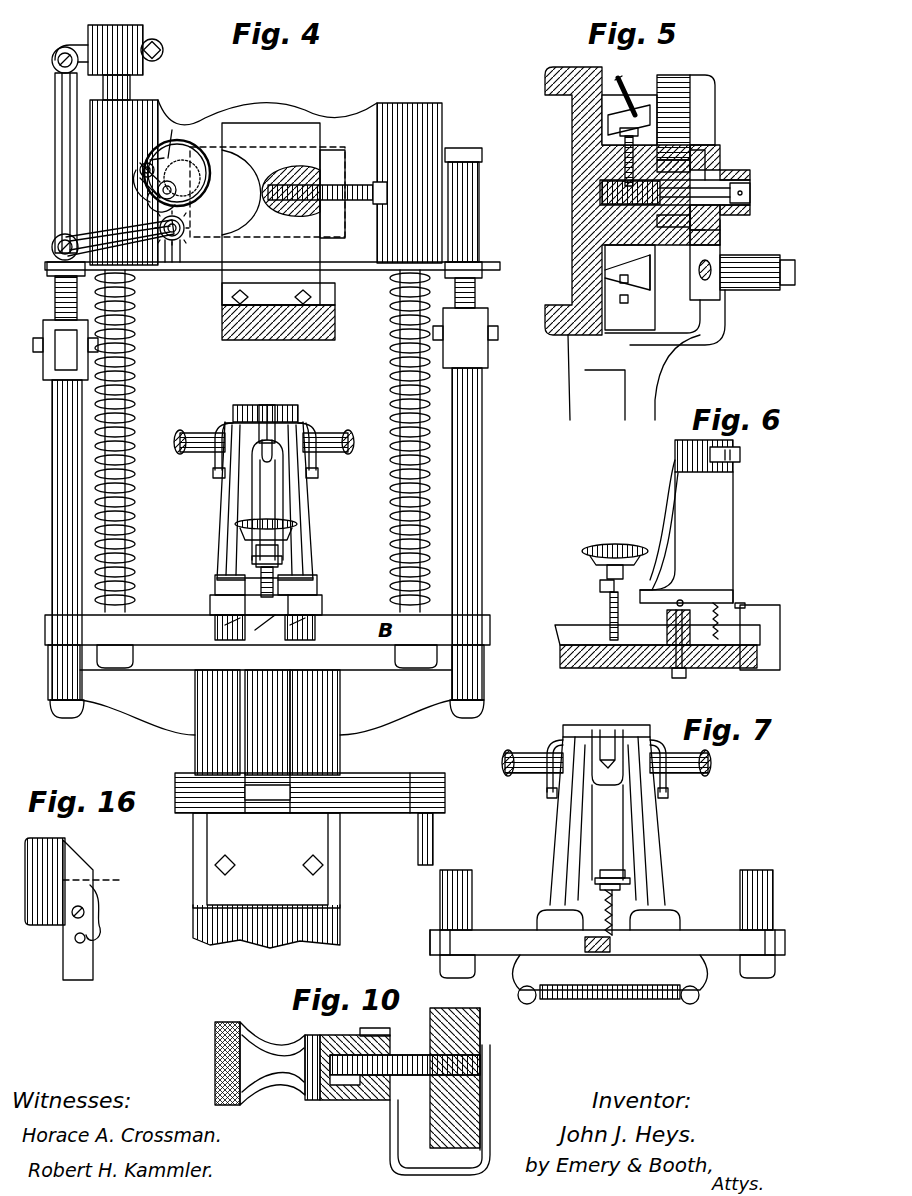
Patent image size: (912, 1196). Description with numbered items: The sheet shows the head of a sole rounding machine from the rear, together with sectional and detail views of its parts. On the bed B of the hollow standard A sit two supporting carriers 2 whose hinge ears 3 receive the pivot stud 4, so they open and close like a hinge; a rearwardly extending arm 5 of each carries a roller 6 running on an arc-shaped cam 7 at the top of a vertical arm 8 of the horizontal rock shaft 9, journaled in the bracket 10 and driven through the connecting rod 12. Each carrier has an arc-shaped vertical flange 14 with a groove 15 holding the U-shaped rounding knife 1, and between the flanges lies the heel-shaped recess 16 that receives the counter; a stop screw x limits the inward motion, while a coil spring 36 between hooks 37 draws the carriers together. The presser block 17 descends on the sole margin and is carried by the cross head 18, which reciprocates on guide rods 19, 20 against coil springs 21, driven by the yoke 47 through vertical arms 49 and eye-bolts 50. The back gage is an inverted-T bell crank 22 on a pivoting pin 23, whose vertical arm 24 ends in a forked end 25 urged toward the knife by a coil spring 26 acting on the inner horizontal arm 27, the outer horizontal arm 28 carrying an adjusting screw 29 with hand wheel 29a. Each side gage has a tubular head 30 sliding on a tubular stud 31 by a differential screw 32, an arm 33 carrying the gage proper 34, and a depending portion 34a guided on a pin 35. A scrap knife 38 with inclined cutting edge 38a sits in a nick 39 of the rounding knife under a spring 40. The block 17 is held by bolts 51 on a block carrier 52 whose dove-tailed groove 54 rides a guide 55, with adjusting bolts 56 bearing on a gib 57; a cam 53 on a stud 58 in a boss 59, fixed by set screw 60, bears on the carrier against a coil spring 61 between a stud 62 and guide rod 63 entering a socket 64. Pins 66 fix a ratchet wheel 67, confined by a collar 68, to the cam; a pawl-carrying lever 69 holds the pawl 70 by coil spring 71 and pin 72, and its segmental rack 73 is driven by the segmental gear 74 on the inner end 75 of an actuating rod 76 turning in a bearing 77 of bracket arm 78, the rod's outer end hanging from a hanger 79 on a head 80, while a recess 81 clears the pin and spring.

In FIG. 4, the rounding knife 1 is at (288, 412).
In FIG. 16, the rounding knife 1 is at (65, 842).
In FIG. 6, the rounding knife 1 is at (733, 445).
In FIG. 7, the rounding knife 1 is at (612, 728).
In FIG. 10, the rounding knife 1 is at (480, 1028).
In FIG. 4, the supporting carriers 2 is at (317, 585).
In FIG. 7, the supporting carriers 2 is at (680, 918).
In FIG. 6, the hinge ears 3 is at (667, 635).
In FIG. 7, the hinge ears 3 is at (612, 935).
In FIG. 6, the pivot stud 4 is at (670, 670).
In FIG. 7, the pivot stud 4 is at (625, 882).
In FIG. 4, the rearwardly extending arm 5 is at (160, 275).
In FIG. 6, the rearwardly extending arm 5 is at (570, 630).
In FIG. 4, the roller 6 is at (250, 398).
In FIG. 4, the arc-shaped cam 7 is at (315, 628).
In FIG. 4, the vertical arm 8 is at (308, 742).
In FIG. 4, the horizontal rock shaft 9 is at (270, 800).
In FIG. 4, the bracket 10 is at (266, 860).
In FIG. 4, the connecting rod 12 is at (418, 838).
In FIG. 4, the vertical flange 14 is at (310, 520).
In FIG. 16, the vertical flange 14 is at (93, 970).
In FIG. 6, the vertical flange 14 is at (722, 496).
In FIG. 7, the vertical flange 14 is at (655, 842).
In FIG. 10, the vertical flange 14 is at (435, 1010).
In FIG. 6, the groove or rabbet 15 is at (672, 463).
In FIG. 6, the heel-shaped recess 16 is at (682, 531).
In FIG. 4, the presser block 17 is at (335, 322).
In FIG. 4, the cross head 18 is at (305, 110).
In FIG. 5, the cross head 18 is at (572, 220).
In FIG. 4, the vertical guide rod 19 is at (395, 403).
In FIG. 7, the vertical guide rod 19 is at (765, 875).
In FIG. 4, the vertical guide rod 20 is at (137, 400).
In FIG. 7, the vertical guide rod 20 is at (472, 886).
In FIG. 4, the coil springs 21 is at (395, 365).
In FIG. 6, the bell crank 22 is at (686, 588).
In FIG. 6, the pivoting pin 23 is at (683, 600).
In FIG. 7, the pivoting pin 23 is at (600, 874).
In FIG. 4, the vertical arm 24 is at (268, 497).
In FIG. 6, the vertical arm 24 is at (666, 540).
In FIG. 7, the vertical arm 24 is at (610, 815).
In FIG. 7, the forked end 25 is at (615, 738).
In FIG. 6, the coil spring 26 is at (755, 613).
In FIG. 7, the coil spring 26 is at (600, 888).
In FIG. 6, the inner horizontal arm 27 is at (733, 588).
In FIG. 7, the inner horizontal arm 27 is at (630, 875).
In FIG. 6, the outer horizontal arm 28 is at (600, 586).
In FIG. 4, the adjusting screw 29 is at (258, 570).
In FIG. 6, the adjusting screw 29 is at (610, 610).
In FIG. 4, the hand wheel 29a is at (237, 526).
In FIG. 6, the hand wheel 29a is at (615, 545).
In FIG. 4, the tubular head 30 is at (212, 440).
In FIG. 7, the tubular head 30 is at (680, 774).
In FIG. 10, the tubular head 30 is at (340, 1040).
In FIG. 10, the tubular stud 31 is at (400, 1050).
In FIG. 10, the differential screw 32 is at (345, 1085).
In FIG. 4, the arm 33 is at (316, 423).
In FIG. 7, the arm 33 is at (666, 745).
In FIG. 10, the arm 33 is at (392, 1140).
In FIG. 6, the gage proper 34 is at (740, 458).
In FIG. 10, the gage proper 34 is at (482, 1065).
In FIG. 4, the depending portion 34a is at (318, 458).
In FIG. 7, the depending portion 34a is at (548, 784).
In FIG. 4, the pin 35 is at (318, 476).
In FIG. 7, the pin 35 is at (668, 790).
In FIG. 7, the coil spring 36 is at (625, 1000).
In FIG. 7, the hook 37 is at (690, 1003).
In FIG. 4, the scrap knife 38 is at (270, 412).
In FIG. 16, the scrap knife 38 is at (85, 873).
In FIG. 16, the cutting edge 38a is at (72, 860).
In FIG. 16, the nick 39 is at (106, 883).
In FIG. 16, the spring 40 is at (100, 932).
In FIG. 4, the yoke 47 is at (266, 702).
In FIG. 4, the vertical arms 49 is at (484, 440).
In FIG. 4, the eye-bolts 50 is at (478, 308).
In FIG. 4, the bolts 51 is at (320, 294).
In FIG. 4, the block carrier 52 is at (315, 270).
In FIG. 4, the cam 53 is at (190, 160).
In FIG. 5, the cam 53 is at (685, 78).
In FIG. 5, the dove-tailed groove 54 is at (642, 292).
In FIG. 5, the guide 55 is at (640, 95).
In FIG. 5, the adjusting bolts 56 is at (620, 76).
In FIG. 5, the gib 57 is at (608, 125).
In FIG. 5, the stud 58 is at (750, 188).
In FIG. 5, the boss 59 is at (640, 240).
In FIG. 5, the set screw 60 is at (620, 133).
In FIG. 4, the coil spring 61 is at (365, 200).
In FIG. 4, the stud 62 is at (376, 182).
In FIG. 4, the guide rod 63 is at (340, 160).
In FIG. 4, the socket 64 is at (300, 178).
In FIG. 5, the pins 66 is at (680, 228).
In FIG. 4, the ratchet wheel 67 is at (195, 148).
In FIG. 5, the ratchet wheel 67 is at (720, 158).
In FIG. 5, the collar 68 is at (722, 218).
In FIG. 4, the pawl-carrying lever 69 is at (148, 163).
In FIG. 5, the pawl-carrying lever 69 is at (725, 178).
In FIG. 4, the pawl 70 is at (168, 180).
In FIG. 5, the pawl 70 is at (705, 145).
In FIG. 4, the coil spring 71 is at (232, 150).
In FIG. 4, the pin 72 is at (186, 230).
In FIG. 4, the segmental rack 73 is at (165, 248).
In FIG. 5, the segmental rack 73 is at (722, 236).
In FIG. 4, the segmental gear 74 is at (182, 240).
In FIG. 5, the segmental gear 74 is at (720, 250).
In FIG. 4, the inner end 75 is at (180, 240).
In FIG. 4, the actuating rod 76 is at (60, 240).
In FIG. 5, the actuating rod 76 is at (699, 270).
In FIG. 4, the bearing 77 is at (176, 248).
In FIG. 5, the bearing 77 is at (760, 285).
In FIG. 4, the bracket arm 78 is at (172, 262).
In FIG. 5, the bracket arm 78 is at (712, 340).
In FIG. 4, the hanger 79 is at (58, 118).
In FIG. 4, the head 80 is at (92, 45).
In FIG. 4, the recess 81 is at (232, 205).
In FIG. 4, the hollow standard A is at (340, 905).
In FIG. 6, the bed B is at (560, 660).
In FIG. 7, the bed B is at (607, 954).
In FIG. 7, the stop screw x is at (598, 952).